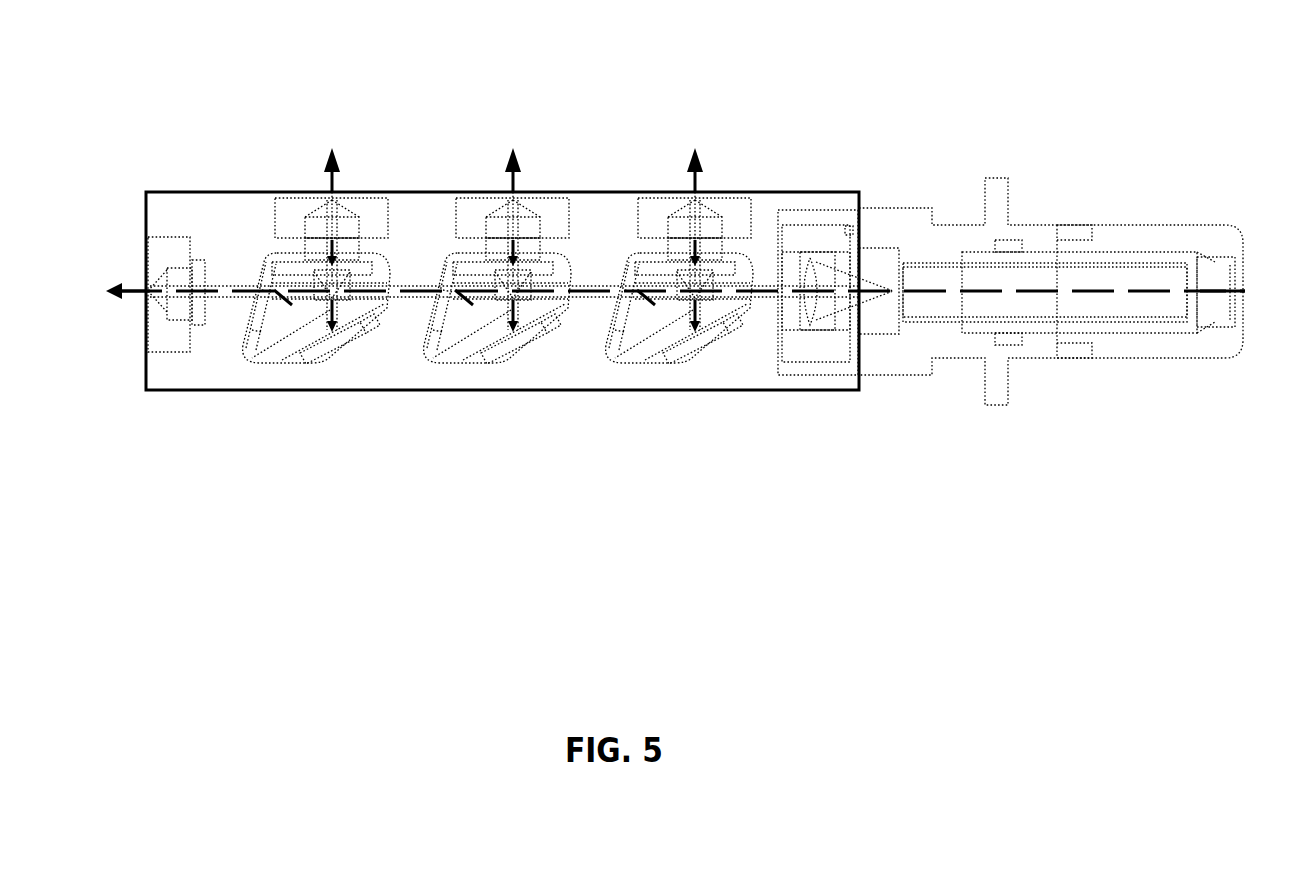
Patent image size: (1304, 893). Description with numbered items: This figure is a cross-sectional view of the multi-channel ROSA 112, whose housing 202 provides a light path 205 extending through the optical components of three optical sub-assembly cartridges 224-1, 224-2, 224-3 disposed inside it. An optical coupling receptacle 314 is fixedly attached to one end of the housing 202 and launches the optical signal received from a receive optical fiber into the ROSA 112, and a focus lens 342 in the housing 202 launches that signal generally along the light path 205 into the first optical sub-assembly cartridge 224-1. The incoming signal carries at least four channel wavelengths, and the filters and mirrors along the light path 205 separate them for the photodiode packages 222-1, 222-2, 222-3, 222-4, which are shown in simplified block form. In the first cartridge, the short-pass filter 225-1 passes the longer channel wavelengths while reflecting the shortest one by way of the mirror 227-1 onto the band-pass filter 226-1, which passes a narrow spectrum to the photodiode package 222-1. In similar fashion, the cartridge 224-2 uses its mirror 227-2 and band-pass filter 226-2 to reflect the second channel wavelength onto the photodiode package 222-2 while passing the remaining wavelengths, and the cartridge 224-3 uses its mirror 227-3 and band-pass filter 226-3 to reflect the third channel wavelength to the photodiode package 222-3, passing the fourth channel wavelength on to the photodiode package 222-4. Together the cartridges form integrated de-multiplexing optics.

The multi-channel ROSA 112 is at (176, 130).
The housing 202 is at (147, 205).
The light path 205 is at (1253, 293).
The photodiode package 222-1 is at (723, 221).
The photodiode package 222-2 is at (548, 221).
The photodiode package 222-3 is at (357, 225).
The photodiode package 222-4 is at (152, 334).
The optical sub-assembly cartridge 224-1 is at (644, 317).
The optical sub-assembly cartridge 224-2 is at (468, 319).
The optical sub-assembly cartridge 224-3 is at (286, 322).
The short-pass filter 225-1 is at (268, 282).
The band-pass filter 226-1 is at (669, 215).
The band-pass filter 226-2 is at (488, 215).
The band-pass filter 226-3 is at (307, 215).
The mirror 227-1 is at (717, 370).
The mirror 227-2 is at (529, 370).
The mirror 227-3 is at (358, 370).
The optical coupling receptacle 314 is at (1122, 340).
The focus lens 342 is at (832, 325).